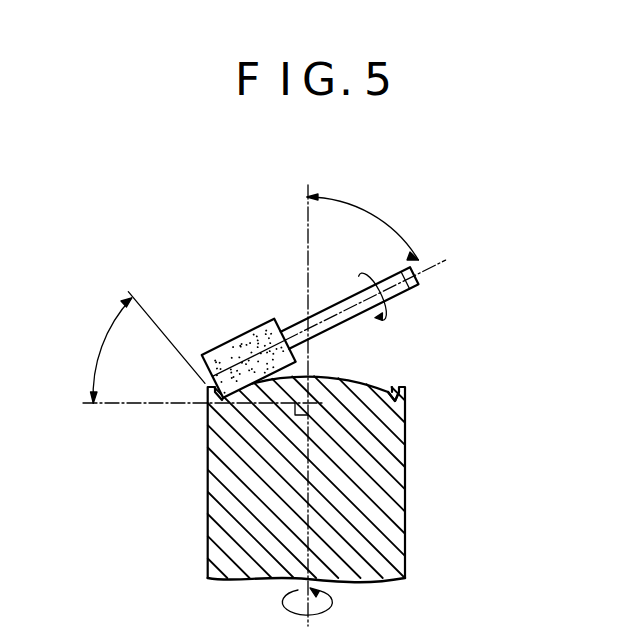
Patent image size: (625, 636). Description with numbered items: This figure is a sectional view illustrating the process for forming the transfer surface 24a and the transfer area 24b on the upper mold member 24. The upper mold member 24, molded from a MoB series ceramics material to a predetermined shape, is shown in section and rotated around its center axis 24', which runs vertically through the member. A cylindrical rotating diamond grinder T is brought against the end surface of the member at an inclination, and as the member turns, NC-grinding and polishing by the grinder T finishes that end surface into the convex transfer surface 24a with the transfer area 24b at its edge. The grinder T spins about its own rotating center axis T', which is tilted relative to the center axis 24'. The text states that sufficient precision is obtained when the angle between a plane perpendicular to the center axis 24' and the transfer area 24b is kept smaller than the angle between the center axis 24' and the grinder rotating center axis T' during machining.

The upper mold member 24 is at (344, 495).
The transfer surface 24a is at (354, 383).
The transfer area 24b is at (397, 392).
The center axis 24' is at (204, 405).
The cylindrical rotating diamond grinder T is at (249, 336).
The rotating center axis of the grinder T' is at (378, 284).